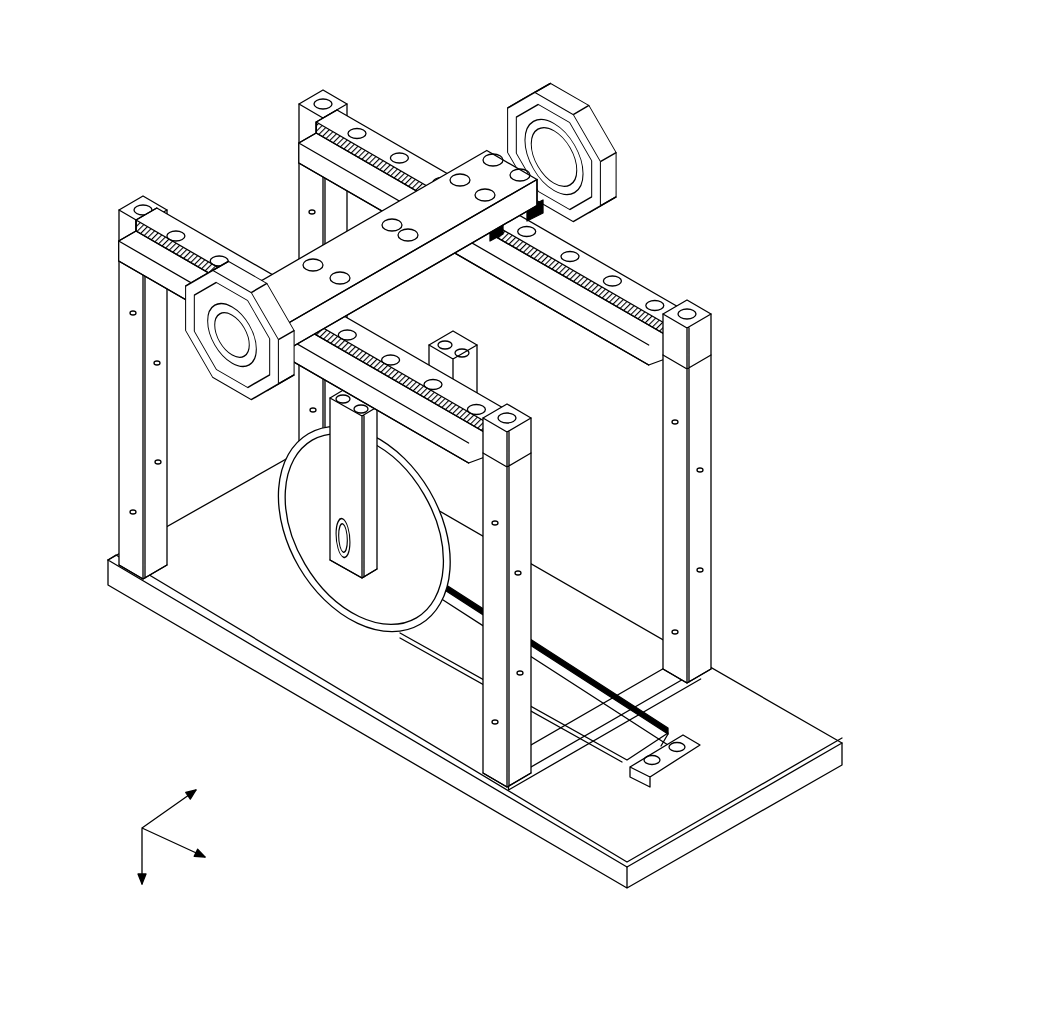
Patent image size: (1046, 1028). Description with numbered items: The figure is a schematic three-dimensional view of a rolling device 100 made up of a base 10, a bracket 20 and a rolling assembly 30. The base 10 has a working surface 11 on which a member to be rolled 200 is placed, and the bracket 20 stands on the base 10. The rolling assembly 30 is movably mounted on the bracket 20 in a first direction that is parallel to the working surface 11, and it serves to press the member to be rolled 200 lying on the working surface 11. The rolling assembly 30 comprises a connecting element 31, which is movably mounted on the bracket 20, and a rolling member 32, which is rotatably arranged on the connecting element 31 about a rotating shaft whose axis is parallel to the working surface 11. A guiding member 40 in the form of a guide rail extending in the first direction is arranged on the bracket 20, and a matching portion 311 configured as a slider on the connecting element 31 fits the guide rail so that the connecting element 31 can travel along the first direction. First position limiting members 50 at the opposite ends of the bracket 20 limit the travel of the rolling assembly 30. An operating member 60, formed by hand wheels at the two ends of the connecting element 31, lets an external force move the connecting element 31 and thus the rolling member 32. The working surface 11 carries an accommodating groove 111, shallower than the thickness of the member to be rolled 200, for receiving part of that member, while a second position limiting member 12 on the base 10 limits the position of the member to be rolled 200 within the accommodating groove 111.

The rolling device 100 is at (497, 54).
The base 10 is at (783, 728).
The working surface 11 is at (302, 642).
The second position limiting member 12 is at (672, 762).
The bracket 20 is at (700, 438).
The rolling assembly 30 is at (371, 259).
The connecting element 31 is at (447, 243).
The matching portion 311 is at (540, 224).
The rolling member 32 is at (310, 517).
The guiding member 40 is at (593, 270).
The first position limiting member 50 is at (140, 196).
The operating member 60 is at (590, 152).
The accommodating groove 111 is at (542, 654).
The member to be rolled 200 is at (592, 715).